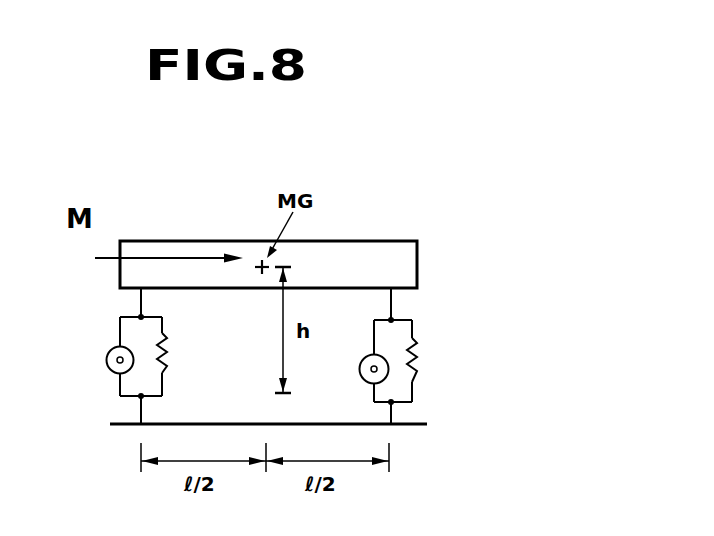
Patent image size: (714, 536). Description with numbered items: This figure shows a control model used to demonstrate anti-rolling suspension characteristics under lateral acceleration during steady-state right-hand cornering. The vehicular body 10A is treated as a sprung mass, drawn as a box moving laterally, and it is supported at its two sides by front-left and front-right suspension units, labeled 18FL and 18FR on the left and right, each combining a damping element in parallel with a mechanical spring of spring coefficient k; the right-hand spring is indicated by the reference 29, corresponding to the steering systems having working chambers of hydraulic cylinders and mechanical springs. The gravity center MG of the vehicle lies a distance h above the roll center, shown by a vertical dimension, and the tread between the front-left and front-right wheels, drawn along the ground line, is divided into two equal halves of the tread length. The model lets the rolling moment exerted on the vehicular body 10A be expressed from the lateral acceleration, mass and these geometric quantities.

The vehicular body 10A is at (189, 241).
The front left shock absorber 18FL is at (108, 357).
The front right shock absorber 18FR is at (359, 377).
The steering system 29 is at (433, 352).